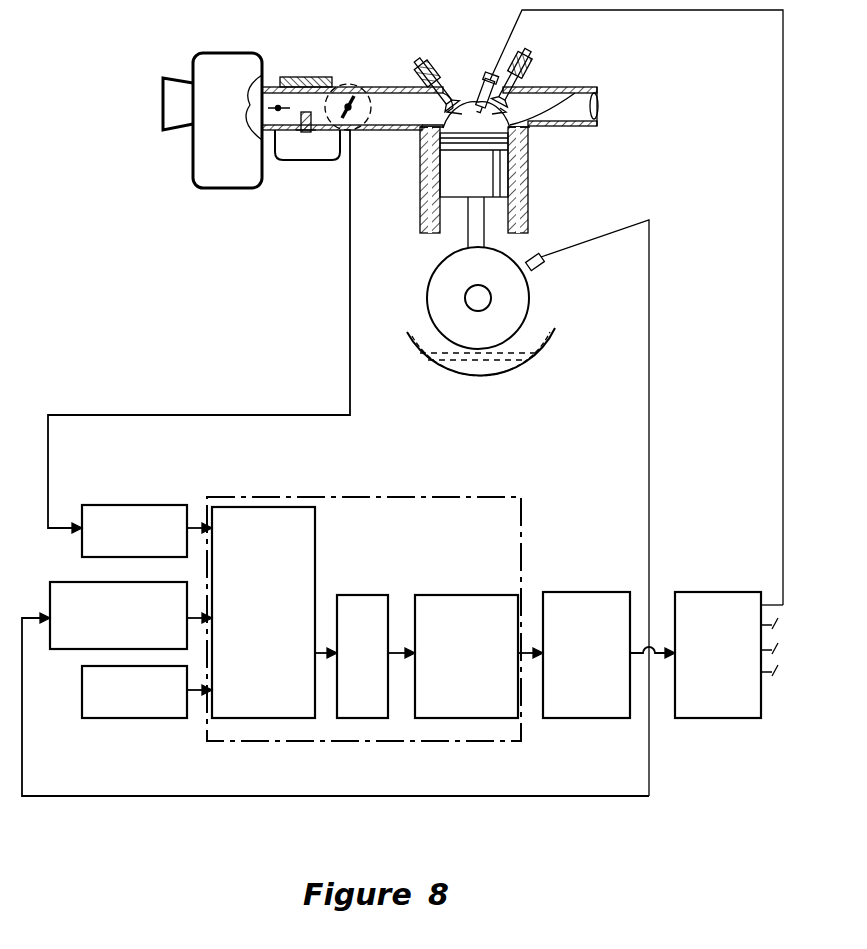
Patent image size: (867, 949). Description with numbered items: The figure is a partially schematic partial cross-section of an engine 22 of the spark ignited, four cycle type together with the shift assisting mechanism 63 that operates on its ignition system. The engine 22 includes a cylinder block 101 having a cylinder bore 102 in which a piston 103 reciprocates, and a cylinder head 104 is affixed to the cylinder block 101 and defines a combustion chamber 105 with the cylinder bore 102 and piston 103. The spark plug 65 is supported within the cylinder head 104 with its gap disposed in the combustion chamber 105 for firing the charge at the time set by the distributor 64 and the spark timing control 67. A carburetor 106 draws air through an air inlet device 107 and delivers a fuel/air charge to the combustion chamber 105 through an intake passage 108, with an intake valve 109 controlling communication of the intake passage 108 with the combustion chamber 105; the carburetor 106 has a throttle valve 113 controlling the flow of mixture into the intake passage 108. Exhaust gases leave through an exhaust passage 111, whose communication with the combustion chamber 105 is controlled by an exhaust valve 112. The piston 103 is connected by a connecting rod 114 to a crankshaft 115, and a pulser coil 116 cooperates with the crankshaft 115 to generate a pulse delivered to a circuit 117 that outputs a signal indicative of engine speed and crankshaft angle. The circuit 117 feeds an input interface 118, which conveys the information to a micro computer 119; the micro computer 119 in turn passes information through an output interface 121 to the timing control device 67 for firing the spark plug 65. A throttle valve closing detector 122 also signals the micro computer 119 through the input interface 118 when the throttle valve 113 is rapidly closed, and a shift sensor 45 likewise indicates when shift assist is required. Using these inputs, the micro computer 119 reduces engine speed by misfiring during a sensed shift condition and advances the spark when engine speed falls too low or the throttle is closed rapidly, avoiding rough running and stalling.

The engine 22 is at (612, 160).
The shift sensor 45 is at (135, 718).
The shift assisting mechanism 63 is at (375, 745).
The distributor 64 is at (690, 720).
The spark plug 65 is at (486, 76).
The spark timing control 67 is at (583, 718).
The cylinder block 101 is at (421, 212).
The cylinder bore 102 is at (528, 233).
The piston 103 is at (490, 173).
The cylinder head 104 is at (407, 128).
The combustion chamber 105 is at (515, 128).
The carburetor 106 is at (312, 172).
The air inlet device 107 is at (222, 189).
The intake passage 108 is at (402, 104).
The intake valve 109 is at (452, 103).
The exhaust passage 111 is at (597, 90).
The exhaust valve 112 is at (535, 108).
The throttle valve 113 is at (348, 84).
The connecting rod 114 is at (458, 233).
The crankshaft 115 is at (464, 298).
The pulser coil 116 is at (528, 268).
The engine speed and crankshaft angle circuit 117 is at (108, 582).
The input interface 118 is at (257, 720).
The micro computer 119 is at (372, 595).
The output interface 121 is at (448, 595).
The throttle valve closing detector 122 is at (128, 505).